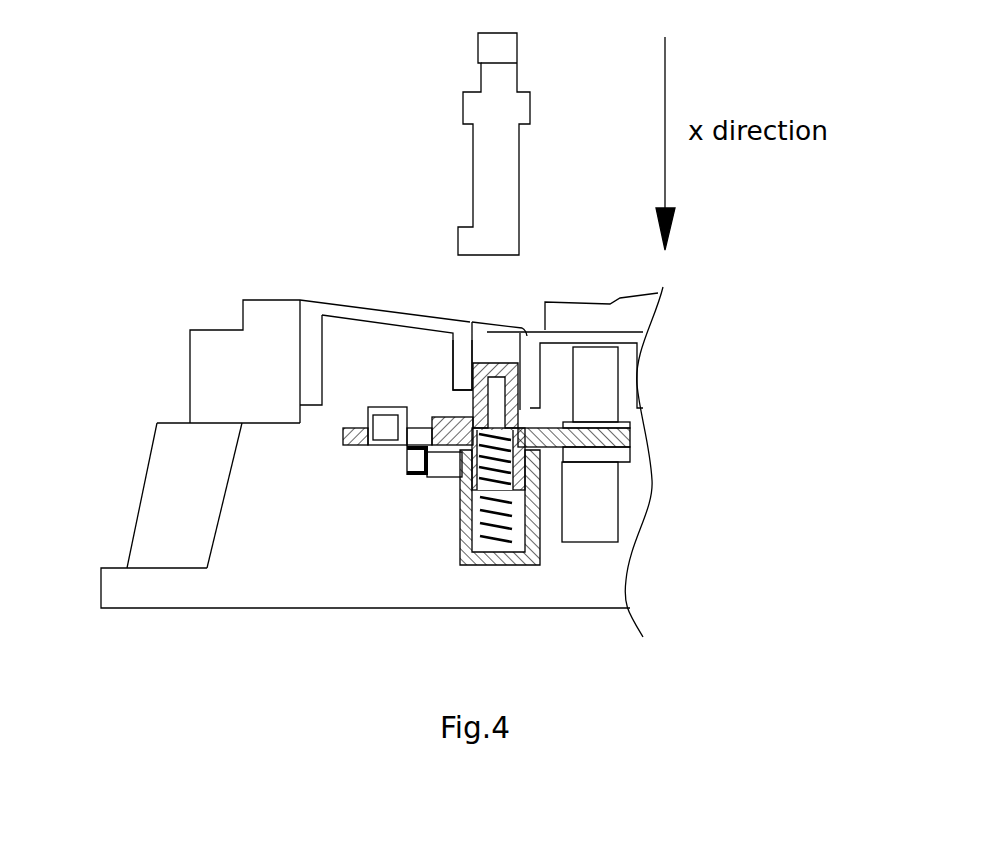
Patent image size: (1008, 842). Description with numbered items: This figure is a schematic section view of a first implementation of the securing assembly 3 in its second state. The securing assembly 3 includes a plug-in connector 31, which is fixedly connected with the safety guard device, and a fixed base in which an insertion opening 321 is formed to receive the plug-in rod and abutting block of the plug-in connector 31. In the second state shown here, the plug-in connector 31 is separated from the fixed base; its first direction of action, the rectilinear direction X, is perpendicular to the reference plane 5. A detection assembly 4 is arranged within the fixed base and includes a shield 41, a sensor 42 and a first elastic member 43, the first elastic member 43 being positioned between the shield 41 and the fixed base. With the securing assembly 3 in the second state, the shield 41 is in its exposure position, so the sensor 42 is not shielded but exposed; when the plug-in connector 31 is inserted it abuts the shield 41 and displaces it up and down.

The securing assembly 3 is at (488, 162).
The plug-in connector 31 is at (492, 183).
The insertion opening 321 is at (488, 335).
The detection assembly 4 is at (458, 440).
The shield 41 is at (452, 430).
The sensor 42 is at (410, 467).
The first elastic member 43 is at (500, 540).
The reference plane 5 is at (282, 608).